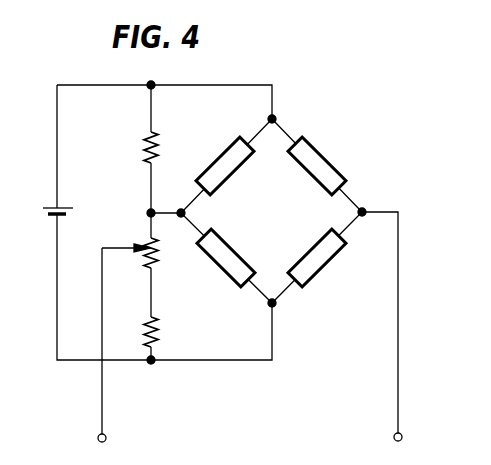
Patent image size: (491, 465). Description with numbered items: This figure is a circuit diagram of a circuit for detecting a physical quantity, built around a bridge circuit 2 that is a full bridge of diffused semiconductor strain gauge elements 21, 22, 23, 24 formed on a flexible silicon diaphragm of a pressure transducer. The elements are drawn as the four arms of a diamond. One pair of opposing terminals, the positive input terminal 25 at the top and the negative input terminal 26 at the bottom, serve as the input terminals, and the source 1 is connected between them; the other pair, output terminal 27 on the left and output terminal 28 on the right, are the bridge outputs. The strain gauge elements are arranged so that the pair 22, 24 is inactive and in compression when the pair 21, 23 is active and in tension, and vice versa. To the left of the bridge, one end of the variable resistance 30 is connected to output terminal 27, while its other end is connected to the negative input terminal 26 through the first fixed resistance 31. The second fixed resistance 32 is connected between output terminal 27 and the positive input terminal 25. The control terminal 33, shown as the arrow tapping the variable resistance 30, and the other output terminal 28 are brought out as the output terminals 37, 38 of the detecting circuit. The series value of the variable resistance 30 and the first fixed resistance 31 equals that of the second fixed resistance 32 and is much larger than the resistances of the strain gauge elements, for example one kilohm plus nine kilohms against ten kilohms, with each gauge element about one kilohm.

The source 1 is at (50, 207).
The bridge circuit 2 is at (282, 224).
The strain gauge element 21 is at (213, 168).
The strain gauge element 22 is at (228, 268).
The strain gauge element 23 is at (320, 265).
The strain gauge element 24 is at (318, 164).
The positive input terminal 25 is at (274, 118).
The negative input terminal 26 is at (276, 304).
The output terminal 27 is at (186, 213).
The output terminal 28 is at (364, 209).
The variable resistance 30 is at (147, 262).
The first fixed resistance 31 is at (147, 332).
The second fixed resistance 32 is at (146, 152).
The control terminal 33 is at (112, 246).
The output terminal 37 is at (107, 438).
The output terminal 38 is at (401, 437).